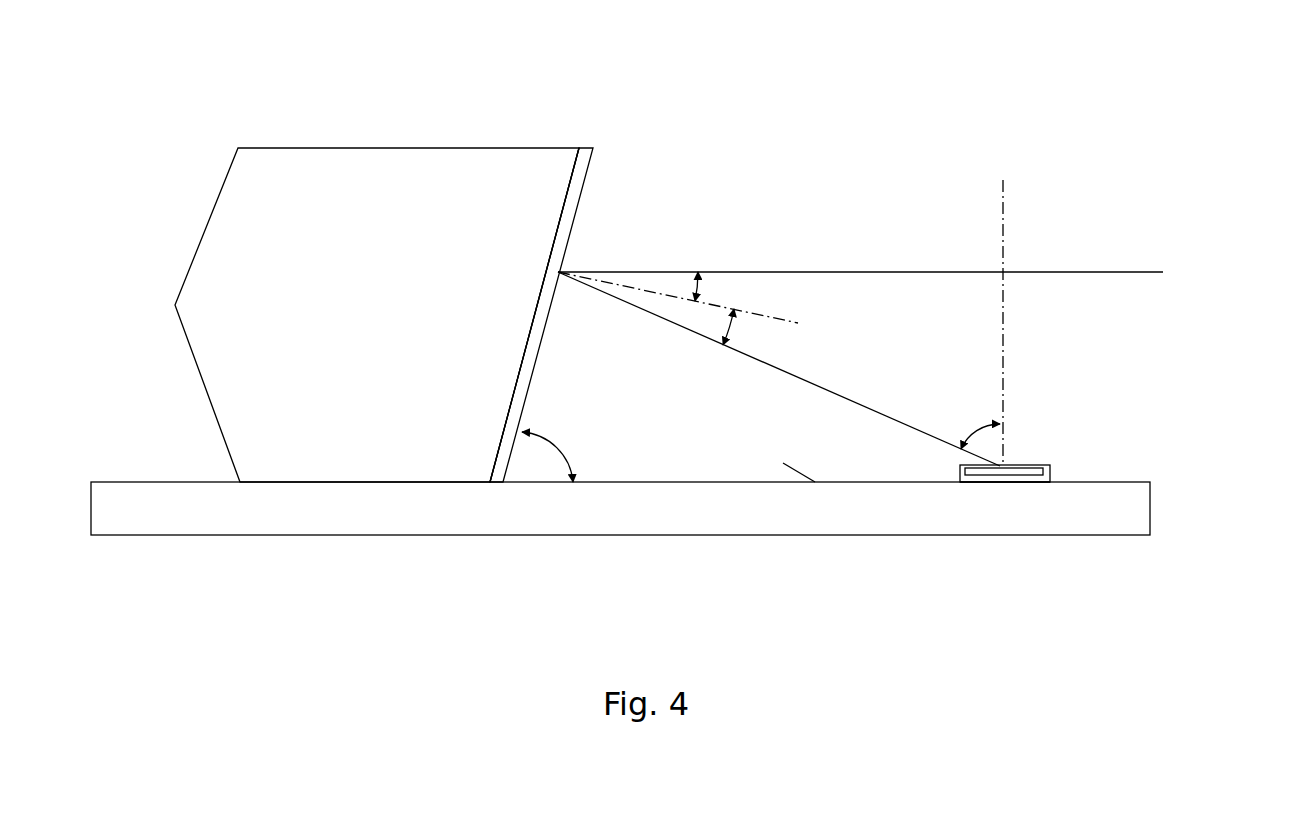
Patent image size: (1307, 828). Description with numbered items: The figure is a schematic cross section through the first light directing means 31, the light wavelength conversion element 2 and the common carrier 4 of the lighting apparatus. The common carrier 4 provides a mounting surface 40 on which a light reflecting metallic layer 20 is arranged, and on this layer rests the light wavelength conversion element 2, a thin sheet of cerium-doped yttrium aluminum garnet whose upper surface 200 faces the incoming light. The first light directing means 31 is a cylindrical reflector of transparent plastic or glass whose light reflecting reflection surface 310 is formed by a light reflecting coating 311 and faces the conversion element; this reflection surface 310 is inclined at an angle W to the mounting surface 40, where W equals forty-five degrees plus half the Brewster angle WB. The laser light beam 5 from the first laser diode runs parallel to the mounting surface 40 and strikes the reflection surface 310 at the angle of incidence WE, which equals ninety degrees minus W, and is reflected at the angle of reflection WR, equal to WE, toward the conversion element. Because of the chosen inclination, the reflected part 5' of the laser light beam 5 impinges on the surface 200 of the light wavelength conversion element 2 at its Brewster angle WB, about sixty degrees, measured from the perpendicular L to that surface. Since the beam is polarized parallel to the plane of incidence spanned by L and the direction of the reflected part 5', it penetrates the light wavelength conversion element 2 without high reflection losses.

The light wavelength conversion element 2 is at (1042, 482).
The light reflecting metallic layer 20 is at (981, 482).
The surface of the light wavelength conversion element 200 is at (1125, 451).
The common carrier 4 is at (641, 522).
The mounting surface 40 is at (783, 463).
The laser light beam 5 is at (860, 192).
The reflected part of the laser light beam 5' is at (786, 289).
The first light directing means 31 is at (286, 175).
The reflection surface 310 is at (571, 252).
The light reflecting coating 311 is at (518, 254).
The perpendicular to the surface of the light wavelength conversion element L is at (1005, 344).
The angle between reflection surface and mounting surface W is at (553, 446).
The angle of incidence WE is at (678, 297).
The angle of reflection WR is at (757, 331).
The Brewster angle WB is at (972, 425).